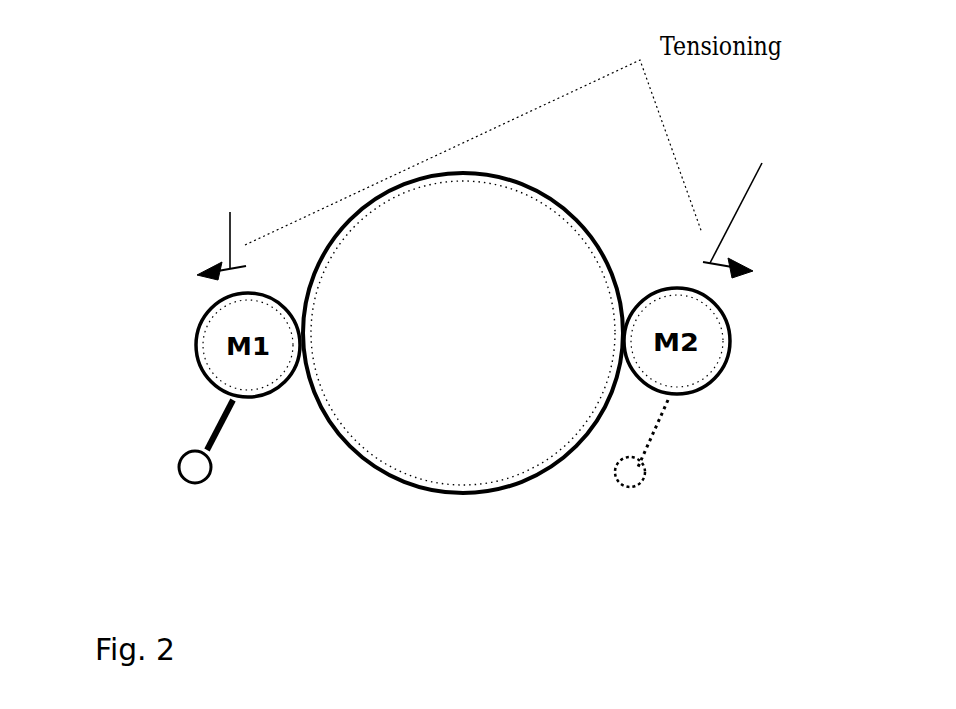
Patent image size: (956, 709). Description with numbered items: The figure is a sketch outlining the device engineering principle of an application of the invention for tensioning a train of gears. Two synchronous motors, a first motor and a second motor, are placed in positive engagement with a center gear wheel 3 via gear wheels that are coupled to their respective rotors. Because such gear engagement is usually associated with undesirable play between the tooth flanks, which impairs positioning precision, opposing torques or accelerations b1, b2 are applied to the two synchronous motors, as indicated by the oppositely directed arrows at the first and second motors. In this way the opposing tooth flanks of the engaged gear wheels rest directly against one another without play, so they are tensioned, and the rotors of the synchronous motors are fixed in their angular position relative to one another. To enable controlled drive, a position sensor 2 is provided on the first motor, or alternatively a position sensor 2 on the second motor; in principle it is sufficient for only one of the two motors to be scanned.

The position sensor 2 is at (180, 470).
The center gear wheel 3 is at (538, 192).
The opposing acceleration b1 is at (223, 226).
The opposing acceleration b2 is at (740, 204).